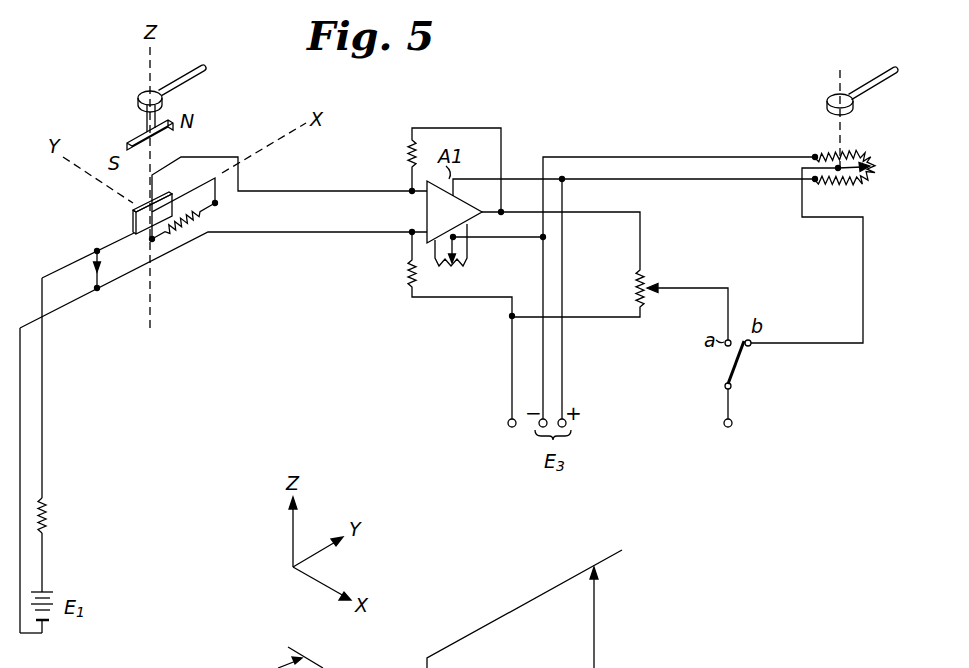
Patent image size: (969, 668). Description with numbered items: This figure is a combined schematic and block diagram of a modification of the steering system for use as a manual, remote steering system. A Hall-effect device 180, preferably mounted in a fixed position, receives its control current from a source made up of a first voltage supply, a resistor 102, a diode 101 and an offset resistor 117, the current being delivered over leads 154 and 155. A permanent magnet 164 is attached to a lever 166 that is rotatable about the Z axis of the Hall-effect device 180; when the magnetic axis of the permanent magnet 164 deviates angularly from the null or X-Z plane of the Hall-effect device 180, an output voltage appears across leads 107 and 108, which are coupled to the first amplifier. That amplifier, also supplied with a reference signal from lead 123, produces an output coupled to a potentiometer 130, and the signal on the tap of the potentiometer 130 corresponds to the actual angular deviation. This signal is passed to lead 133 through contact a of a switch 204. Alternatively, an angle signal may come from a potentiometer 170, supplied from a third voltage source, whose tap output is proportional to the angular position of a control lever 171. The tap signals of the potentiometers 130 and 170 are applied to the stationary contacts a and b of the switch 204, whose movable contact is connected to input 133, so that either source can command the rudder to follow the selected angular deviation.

The diode 101 is at (94, 278).
The resistor 102 is at (47, 513).
The lead 107 is at (213, 157).
The lead 108 is at (214, 233).
The offset resistor 117 is at (186, 233).
The lead 123 is at (509, 420).
The potentiometer 130 is at (637, 289).
The lead 133 is at (737, 409).
The lead 154 is at (122, 231).
The lead 155 is at (214, 187).
The permanent magnet 164 is at (137, 143).
The lever 166 is at (187, 67).
The potentiometer 170 is at (820, 155).
The control lever 171 is at (875, 73).
The Hall-effect device 180 is at (131, 207).
The switch 204 is at (718, 370).